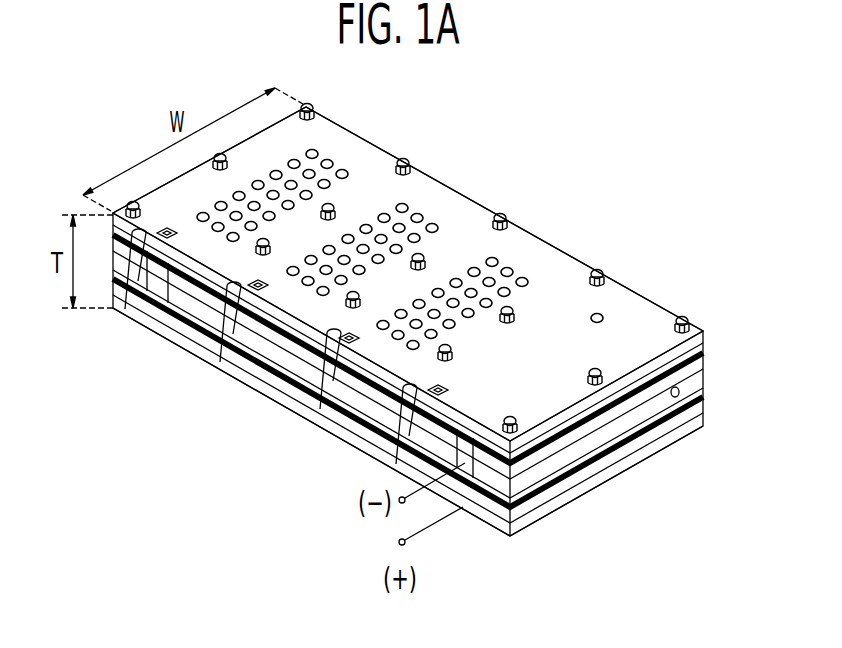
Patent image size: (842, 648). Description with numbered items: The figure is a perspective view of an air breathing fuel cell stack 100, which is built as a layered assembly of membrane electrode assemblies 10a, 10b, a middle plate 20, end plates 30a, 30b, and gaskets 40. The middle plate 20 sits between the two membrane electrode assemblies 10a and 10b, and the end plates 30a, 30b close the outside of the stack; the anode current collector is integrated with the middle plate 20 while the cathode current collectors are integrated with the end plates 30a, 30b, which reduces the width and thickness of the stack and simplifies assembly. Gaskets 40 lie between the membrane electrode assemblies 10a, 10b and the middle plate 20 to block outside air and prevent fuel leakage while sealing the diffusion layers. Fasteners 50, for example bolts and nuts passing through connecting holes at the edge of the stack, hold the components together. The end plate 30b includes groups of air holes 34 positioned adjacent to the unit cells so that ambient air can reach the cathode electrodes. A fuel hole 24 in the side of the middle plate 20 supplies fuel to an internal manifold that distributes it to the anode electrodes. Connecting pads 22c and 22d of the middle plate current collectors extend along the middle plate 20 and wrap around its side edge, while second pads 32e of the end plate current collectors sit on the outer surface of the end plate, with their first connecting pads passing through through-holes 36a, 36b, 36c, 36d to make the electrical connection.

The air breathing fuel cell stack 100 is at (523, 170).
The membrane electrode assembly 10a is at (704, 354).
The membrane electrode assembly 10b is at (704, 409).
The middle plate 20 is at (704, 384).
The end plate 30a is at (706, 331).
The end plate 30b is at (694, 427).
The gasket 40 is at (704, 338).
The fastener 50 is at (688, 318).
The air hole 34 is at (602, 315).
The fuel hole 24 is at (677, 398).
The second connecting pad 22c is at (477, 466).
The third connecting pad 22d is at (152, 305).
The second pad 32e is at (338, 345).
The through-hole 36a is at (122, 312).
The through-hole 36b is at (222, 358).
The through-hole 36c is at (322, 406).
The through-hole 36d is at (392, 420).